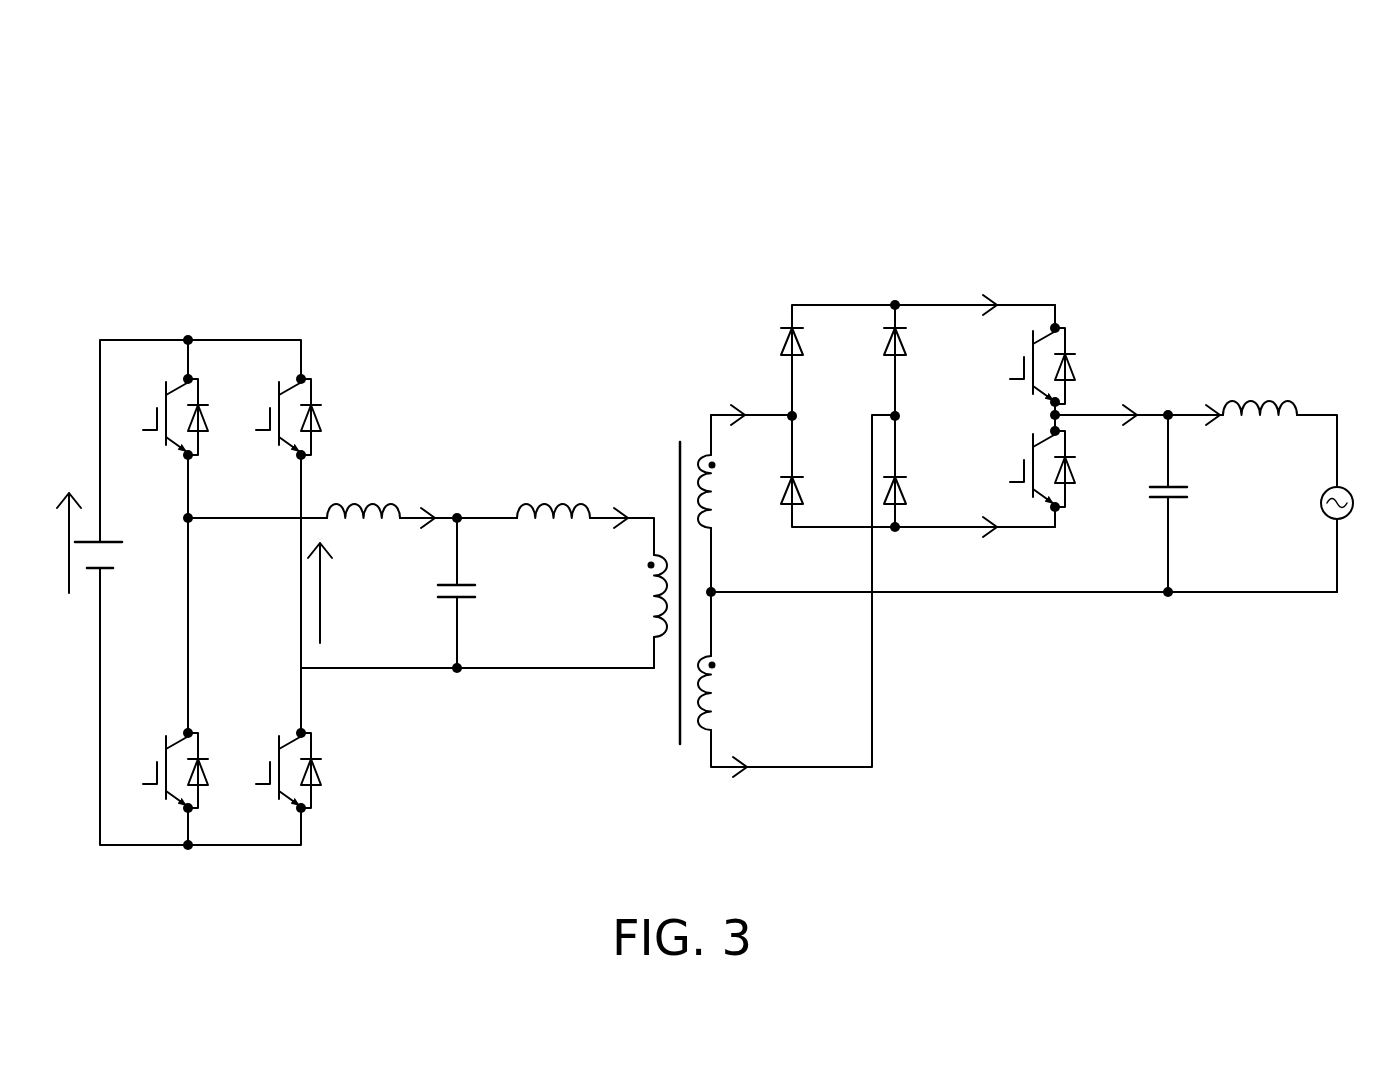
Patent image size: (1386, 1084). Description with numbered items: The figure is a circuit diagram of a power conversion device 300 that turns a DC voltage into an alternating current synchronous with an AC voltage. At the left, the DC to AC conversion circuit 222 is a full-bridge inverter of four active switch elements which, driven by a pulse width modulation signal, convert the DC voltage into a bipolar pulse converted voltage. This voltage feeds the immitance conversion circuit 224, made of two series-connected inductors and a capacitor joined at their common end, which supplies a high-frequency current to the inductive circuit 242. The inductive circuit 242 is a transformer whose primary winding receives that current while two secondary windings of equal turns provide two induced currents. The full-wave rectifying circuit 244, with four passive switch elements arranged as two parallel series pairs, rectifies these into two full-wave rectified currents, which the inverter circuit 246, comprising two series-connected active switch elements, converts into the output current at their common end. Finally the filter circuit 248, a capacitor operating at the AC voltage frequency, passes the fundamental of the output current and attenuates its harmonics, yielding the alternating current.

The power conversion device 300 is at (1340, 93).
The DC to AC conversion circuit 222 is at (207, 303).
The immitance conversion circuit 224 is at (462, 455).
The inductive circuit 242 is at (663, 418).
The full-wave rectifying circuit 244 is at (867, 287).
The inverter circuit 246 is at (1063, 285).
The filter circuit 248 is at (1171, 378).